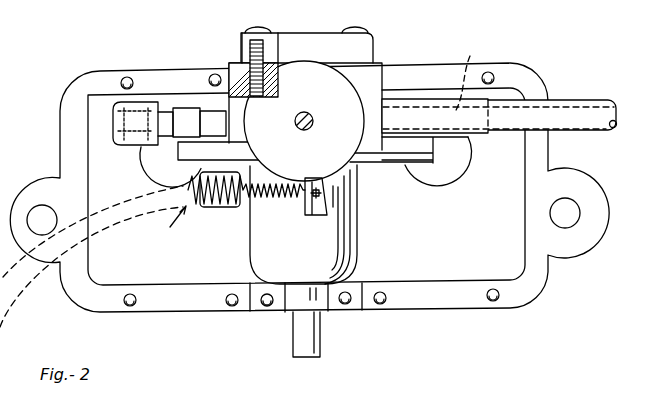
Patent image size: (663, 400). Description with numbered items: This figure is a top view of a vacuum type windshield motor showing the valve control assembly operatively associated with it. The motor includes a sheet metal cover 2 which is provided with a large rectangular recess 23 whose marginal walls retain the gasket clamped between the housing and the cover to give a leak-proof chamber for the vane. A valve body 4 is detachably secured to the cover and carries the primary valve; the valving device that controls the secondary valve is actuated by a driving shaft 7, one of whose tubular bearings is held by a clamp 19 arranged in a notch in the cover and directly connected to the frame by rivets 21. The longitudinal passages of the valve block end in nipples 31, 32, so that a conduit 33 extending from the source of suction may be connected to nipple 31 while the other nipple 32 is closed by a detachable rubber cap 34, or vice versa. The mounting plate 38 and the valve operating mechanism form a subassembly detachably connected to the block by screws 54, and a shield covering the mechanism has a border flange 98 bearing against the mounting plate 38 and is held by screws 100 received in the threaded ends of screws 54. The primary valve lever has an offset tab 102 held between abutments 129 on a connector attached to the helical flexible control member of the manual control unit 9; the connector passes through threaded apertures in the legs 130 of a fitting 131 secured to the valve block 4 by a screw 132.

The cover 2 is at (309, 187).
The valve body 4 is at (383, 66).
The driving shaft 7 is at (297, 348).
The control unit 9 is at (93, 256).
The clamp 19 is at (278, 306).
The rivets 21 is at (266, 306).
The recess 23 is at (526, 170).
The nipple 31 is at (473, 52).
The nipple 32 is at (187, 110).
The conduit 33 is at (607, 100).
The rubber cap 34 is at (106, 118).
The mounting plate 38 is at (277, 71).
The screws 54 is at (241, 45).
The border flange 98 is at (234, 63).
The screws 100 is at (259, 27).
The offset tab 102 is at (327, 209).
The abutments 129 is at (337, 198).
The legs 130 is at (237, 208).
The fitting 131 is at (225, 173).
The screw 132 is at (200, 175).